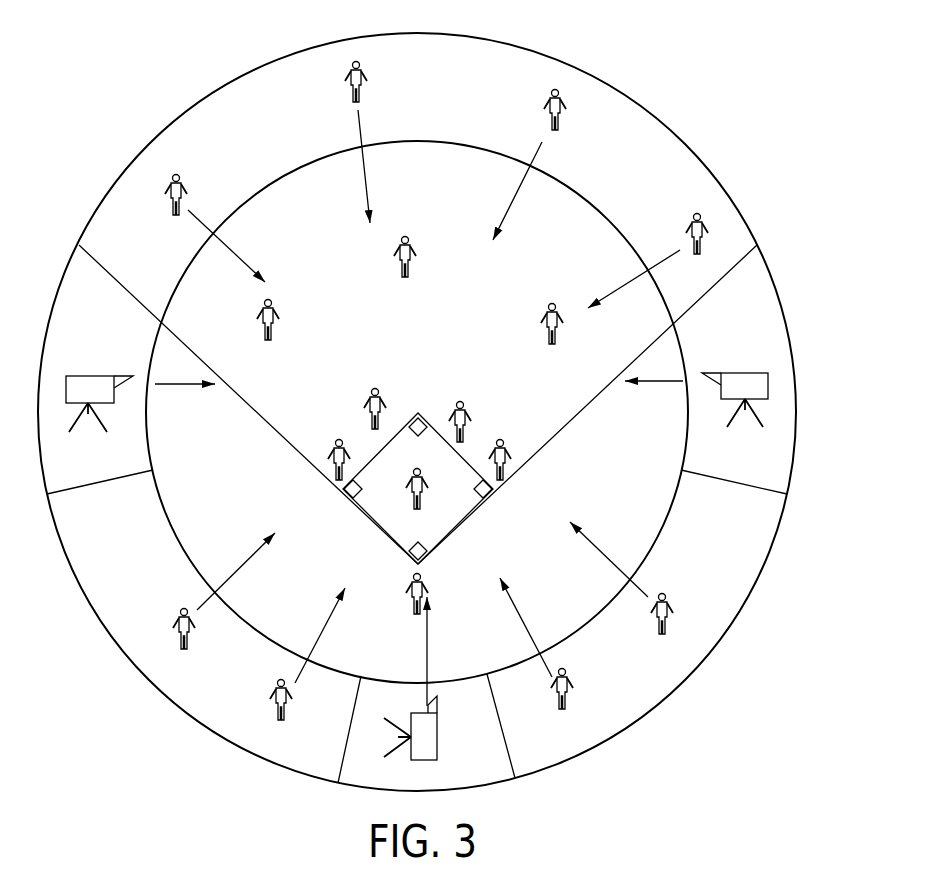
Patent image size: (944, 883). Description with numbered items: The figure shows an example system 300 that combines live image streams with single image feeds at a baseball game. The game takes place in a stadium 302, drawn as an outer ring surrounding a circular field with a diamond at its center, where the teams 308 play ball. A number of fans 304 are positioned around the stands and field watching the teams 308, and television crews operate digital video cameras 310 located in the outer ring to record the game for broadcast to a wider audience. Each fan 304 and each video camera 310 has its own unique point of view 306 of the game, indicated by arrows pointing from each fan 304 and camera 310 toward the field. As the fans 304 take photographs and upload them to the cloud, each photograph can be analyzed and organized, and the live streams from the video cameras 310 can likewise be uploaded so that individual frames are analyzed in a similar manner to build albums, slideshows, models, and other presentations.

The system 300 is at (417, 408).
The stadium 302 is at (190, 85).
The fans 304 is at (362, 82).
The point of view 306 is at (368, 195).
The teams 308 is at (413, 258).
The digital video cameras 310 is at (92, 383).